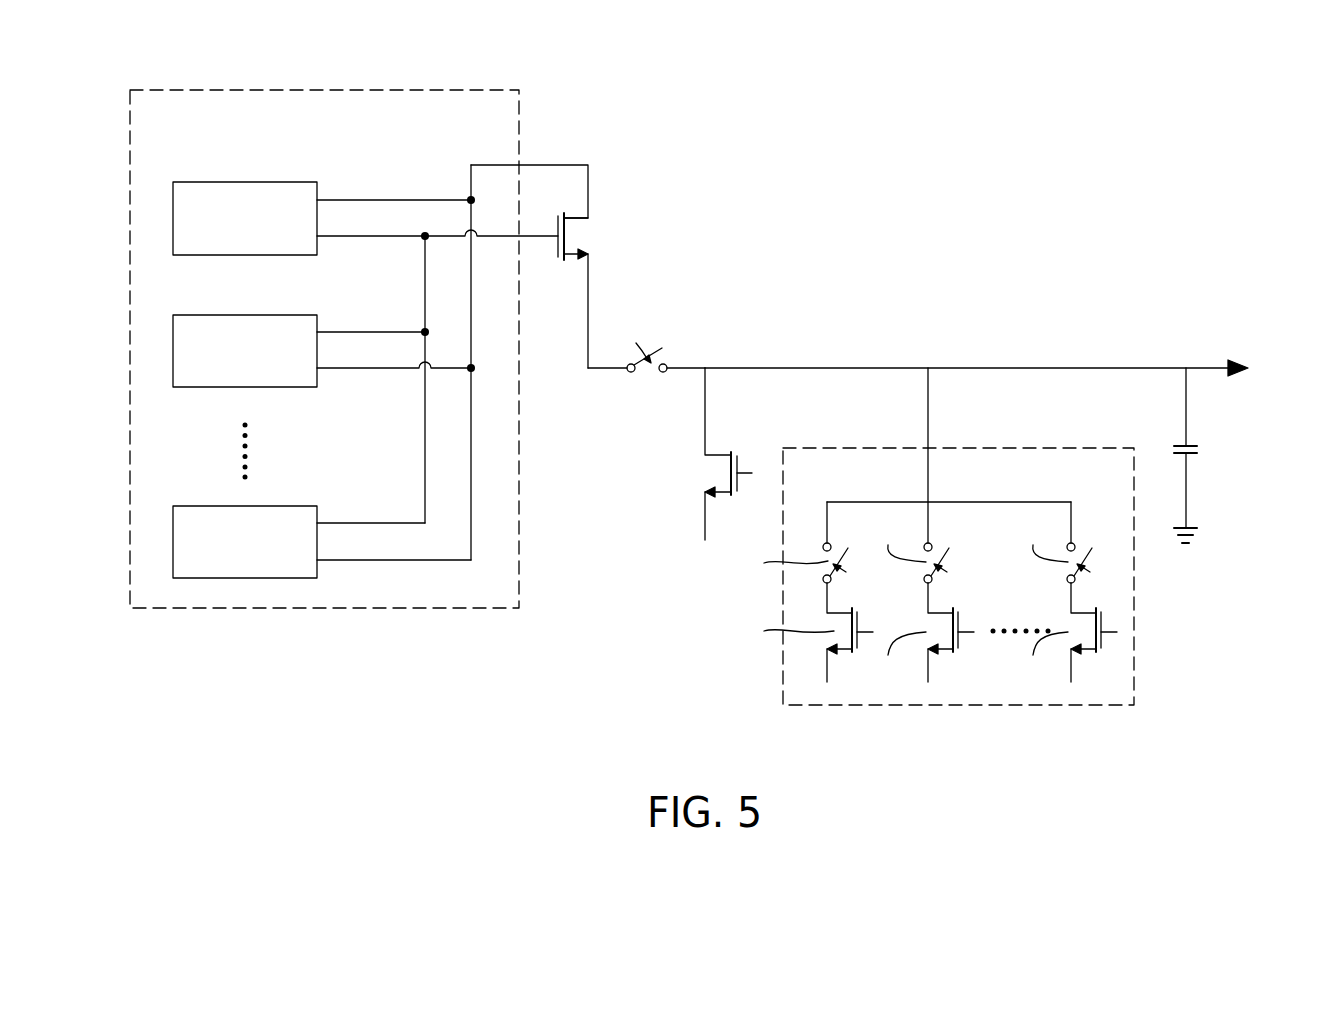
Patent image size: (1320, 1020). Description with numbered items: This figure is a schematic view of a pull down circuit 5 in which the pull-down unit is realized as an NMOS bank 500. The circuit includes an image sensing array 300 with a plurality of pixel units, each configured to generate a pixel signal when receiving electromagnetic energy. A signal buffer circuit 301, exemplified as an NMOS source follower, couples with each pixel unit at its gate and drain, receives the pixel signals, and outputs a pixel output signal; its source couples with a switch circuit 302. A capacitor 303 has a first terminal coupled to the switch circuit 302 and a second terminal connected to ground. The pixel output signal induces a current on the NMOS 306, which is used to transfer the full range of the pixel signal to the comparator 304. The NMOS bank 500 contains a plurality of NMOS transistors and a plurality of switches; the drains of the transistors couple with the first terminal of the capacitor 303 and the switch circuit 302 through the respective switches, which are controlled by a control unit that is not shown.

The pull down circuit 5 is at (1232, 178).
The image sensing array 300 is at (322, 90).
The signal buffer circuit 301 is at (590, 238).
The switch circuit 302 is at (648, 378).
The capacitor 303 is at (1203, 448).
The comparator 304 is at (1232, 356).
The NMOS 306 is at (704, 472).
The NMOS bank 500 is at (1136, 650).